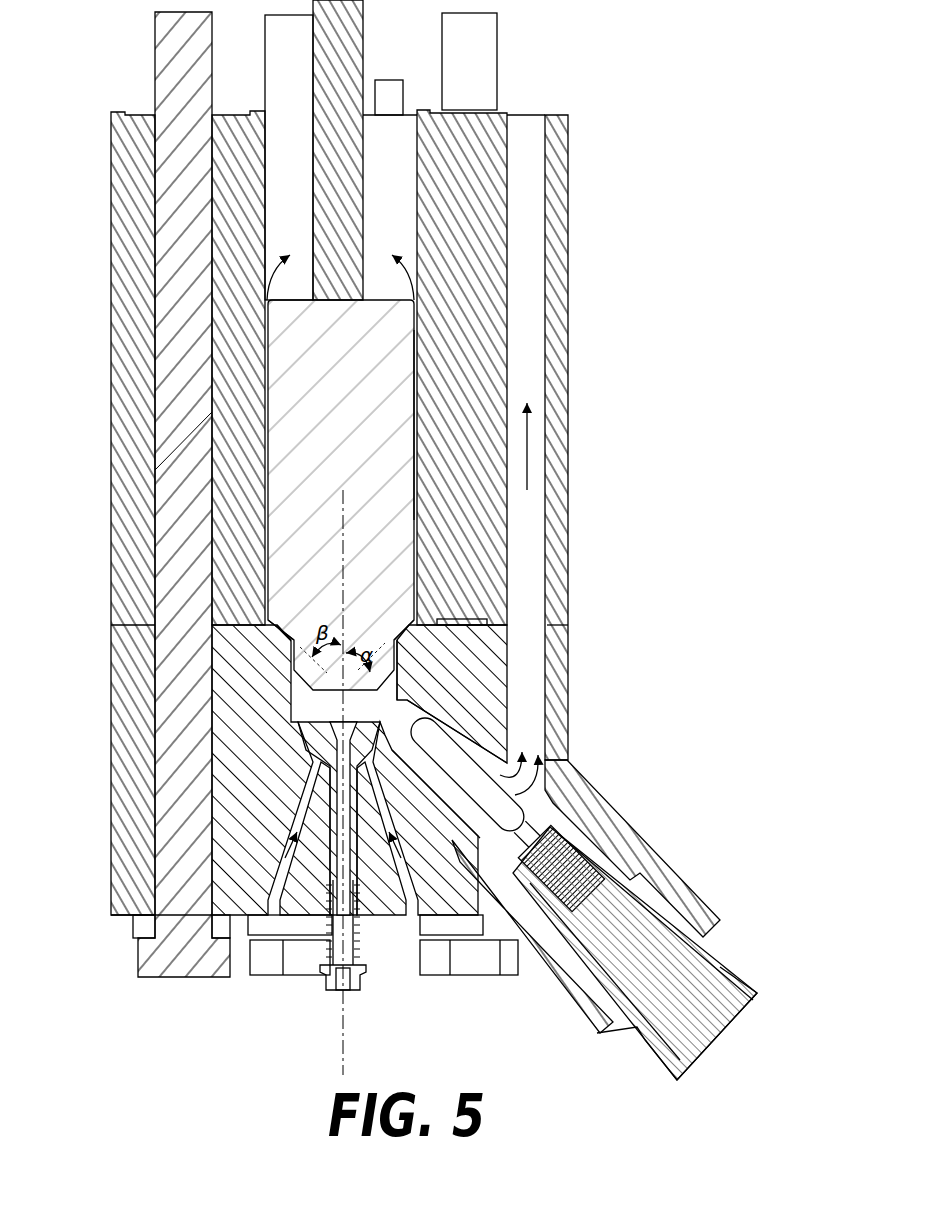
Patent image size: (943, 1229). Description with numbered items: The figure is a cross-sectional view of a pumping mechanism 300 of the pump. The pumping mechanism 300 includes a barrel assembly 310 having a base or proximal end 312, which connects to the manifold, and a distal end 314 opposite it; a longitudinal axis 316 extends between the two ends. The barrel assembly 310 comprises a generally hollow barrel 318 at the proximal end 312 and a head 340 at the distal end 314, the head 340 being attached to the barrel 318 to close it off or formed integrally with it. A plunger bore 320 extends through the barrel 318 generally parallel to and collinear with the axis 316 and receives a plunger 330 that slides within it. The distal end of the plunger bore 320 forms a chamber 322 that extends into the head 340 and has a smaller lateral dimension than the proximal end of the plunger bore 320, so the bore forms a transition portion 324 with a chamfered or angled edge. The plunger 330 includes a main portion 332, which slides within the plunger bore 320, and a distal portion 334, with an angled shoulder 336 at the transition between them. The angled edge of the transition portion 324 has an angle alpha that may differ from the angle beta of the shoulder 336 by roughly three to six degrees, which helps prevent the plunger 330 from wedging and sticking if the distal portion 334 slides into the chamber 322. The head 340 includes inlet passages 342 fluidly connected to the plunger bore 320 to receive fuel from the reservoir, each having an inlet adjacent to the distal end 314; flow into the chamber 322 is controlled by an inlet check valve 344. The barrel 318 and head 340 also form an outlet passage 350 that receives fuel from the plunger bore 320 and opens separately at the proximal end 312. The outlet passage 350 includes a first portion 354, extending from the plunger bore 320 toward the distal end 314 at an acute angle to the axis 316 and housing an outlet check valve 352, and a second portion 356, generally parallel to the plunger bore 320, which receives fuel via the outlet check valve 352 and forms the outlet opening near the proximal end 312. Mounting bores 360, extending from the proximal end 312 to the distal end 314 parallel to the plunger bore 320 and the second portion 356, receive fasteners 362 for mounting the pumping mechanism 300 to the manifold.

The pumping mechanism 300 is at (781, 65).
The barrel assembly 310 is at (568, 232).
The proximal end 312 is at (111, 112).
The distal end 314 is at (108, 915).
The longitudinal axis 316 is at (345, 1058).
The barrel 318 is at (568, 378).
The plunger bore 320 is at (388, 143).
The chamber 322 is at (327, 718).
The transition portion 324 is at (280, 640).
The plunger 330 is at (356, 438).
The main portion 332 is at (417, 430).
The distal portion 334 is at (400, 660).
The shoulder 336 is at (290, 627).
The head 340 is at (568, 705).
The inlet passage 342 is at (243, 918).
The inlet check valve 344 is at (336, 997).
The outlet passage 350 is at (530, 538).
The outlet check valve 352 is at (545, 782).
The first portion 354 is at (478, 840).
The second portion 356 is at (528, 618).
The mounting bore 360 is at (126, 298).
The fastener 362 is at (180, 442).